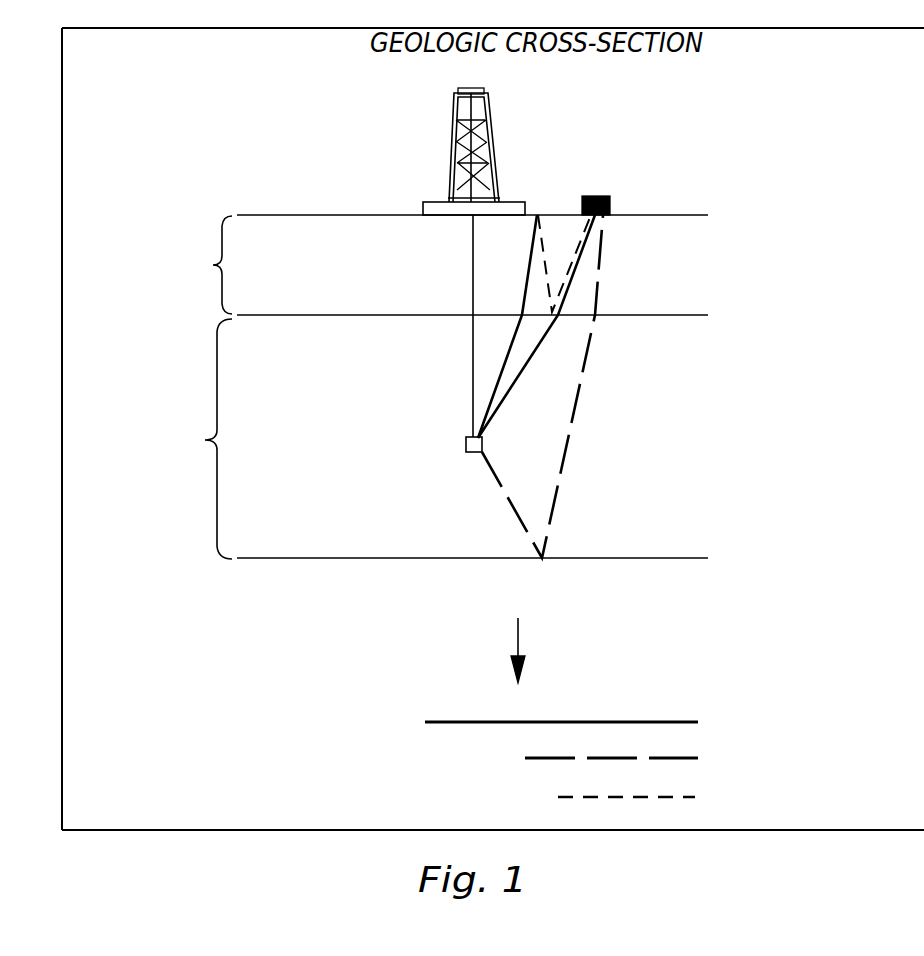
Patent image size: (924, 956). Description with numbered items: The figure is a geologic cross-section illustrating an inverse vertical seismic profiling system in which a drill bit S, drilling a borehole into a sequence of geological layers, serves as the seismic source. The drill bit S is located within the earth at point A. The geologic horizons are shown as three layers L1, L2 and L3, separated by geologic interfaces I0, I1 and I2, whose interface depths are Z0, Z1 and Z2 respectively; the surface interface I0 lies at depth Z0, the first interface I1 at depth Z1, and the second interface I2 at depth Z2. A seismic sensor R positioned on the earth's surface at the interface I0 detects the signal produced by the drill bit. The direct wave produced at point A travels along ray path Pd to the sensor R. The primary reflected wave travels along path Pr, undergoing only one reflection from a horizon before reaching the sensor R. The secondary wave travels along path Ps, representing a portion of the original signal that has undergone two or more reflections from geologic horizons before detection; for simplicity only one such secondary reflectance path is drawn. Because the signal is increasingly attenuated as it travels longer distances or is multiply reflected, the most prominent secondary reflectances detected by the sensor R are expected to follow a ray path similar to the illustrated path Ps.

The seismic sensor R is at (596, 192).
The drill bit S is at (465, 340).
The point A is at (495, 452).
The direct wave ray path Pd is at (401, 478).
The primary reflected wave path Pr is at (401, 497).
The secondary wave path Ps is at (400, 515).
The first geologic layer L1 is at (291, 265).
The second geologic layer L2 is at (281, 439).
The third geologic layer L3 is at (389, 630).
The surface geologic interface I0 is at (484, 216).
The first geologic interface I1 is at (484, 314).
The second geologic interface I2 is at (487, 558).
The surface interface depth Z0 is at (793, 204).
The first interface depth Z1 is at (828, 316).
The second interface depth Z2 is at (828, 559).